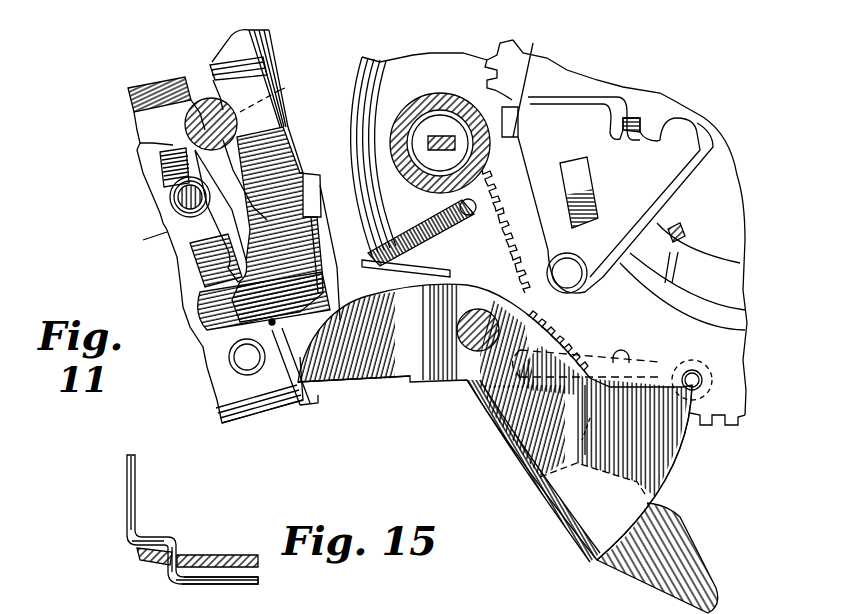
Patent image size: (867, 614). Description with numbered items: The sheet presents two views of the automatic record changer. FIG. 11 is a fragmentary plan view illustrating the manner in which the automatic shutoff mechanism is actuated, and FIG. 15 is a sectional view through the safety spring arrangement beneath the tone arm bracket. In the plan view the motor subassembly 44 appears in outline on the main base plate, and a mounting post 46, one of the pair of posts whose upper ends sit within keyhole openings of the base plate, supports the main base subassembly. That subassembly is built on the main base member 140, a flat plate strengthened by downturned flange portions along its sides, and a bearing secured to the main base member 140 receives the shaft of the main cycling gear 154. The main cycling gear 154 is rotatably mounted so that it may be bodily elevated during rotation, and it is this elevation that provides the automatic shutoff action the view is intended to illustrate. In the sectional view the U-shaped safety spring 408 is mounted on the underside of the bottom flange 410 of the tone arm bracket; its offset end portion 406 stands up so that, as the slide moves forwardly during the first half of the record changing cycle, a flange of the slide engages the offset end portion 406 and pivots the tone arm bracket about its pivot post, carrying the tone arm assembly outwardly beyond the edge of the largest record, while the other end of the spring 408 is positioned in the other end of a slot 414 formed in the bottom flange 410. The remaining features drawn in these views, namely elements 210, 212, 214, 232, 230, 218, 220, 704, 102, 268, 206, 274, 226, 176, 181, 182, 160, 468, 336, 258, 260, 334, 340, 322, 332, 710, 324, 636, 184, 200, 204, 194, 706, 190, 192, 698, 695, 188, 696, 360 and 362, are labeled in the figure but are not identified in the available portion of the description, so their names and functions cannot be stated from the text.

In FIG. 11, the motor subassembly 44 is at (268, 42).
In FIG. 11, the lever cap 210 is at (268, 66).
In FIG. 11, the lever edge 212 is at (279, 96).
In FIG. 11, the pivot pin 214 is at (214, 150).
In FIG. 11, the mounting flange 232 is at (152, 132).
In FIG. 11, the screw 230 is at (168, 188).
In FIG. 11, the fastener 218 is at (243, 360).
In FIG. 11, the spacer plate 220 is at (190, 262).
In FIG. 11, the block 704 is at (264, 292).
In FIG. 11, the plate 102 is at (300, 357).
In FIG. 11, the shoulder 268 is at (322, 186).
In FIG. 11, the rack member 206 is at (320, 245).
In FIG. 11, the body edge 274 is at (207, 347).
In FIG. 11, the lower tab 226 is at (310, 407).
In FIG. 11, the curved arm 176 is at (410, 108).
In FIG. 11, the contour line 181 is at (425, 85).
In FIG. 11, the main base member 140 is at (477, 53).
In FIG. 11, the housing notch 182 is at (507, 90).
In FIG. 11, the gear 160 is at (393, 160).
In FIG. 11, the key 468 is at (440, 137).
In FIG. 11, the gear hub 336 is at (427, 202).
In FIG. 11, the rod 258 is at (400, 235).
In FIG. 11, the bracket 260 is at (425, 268).
In FIG. 11, the housing wall 334 is at (533, 43).
In FIG. 11, the hook 340 is at (630, 118).
In FIG. 11, the outer wall 322 is at (700, 130).
In FIG. 11, the inner wall 332 is at (687, 153).
In FIG. 11, the main cycling gear 154 is at (735, 178).
In FIG. 11, the slot 710 is at (598, 192).
In FIG. 11, the boss 324 is at (590, 258).
In FIG. 11, the arcuate guide 636 is at (680, 240).
In FIG. 11, the rack teeth 184 is at (740, 423).
In FIG. 11, the sector cam 200 is at (568, 320).
In FIG. 11, the mounting post 46 is at (470, 327).
In FIG. 11, the cam base 204 is at (343, 380).
In FIG. 11, the cam edge 194 is at (525, 475).
In FIG. 11, the cam arc 706 is at (683, 448).
In FIG. 11, the tail 190 is at (668, 512).
In FIG. 11, the tail end 192 is at (700, 562).
In FIG. 11, the pivot pin 698 is at (703, 378).
In FIG. 11, the pin 695 is at (698, 365).
In FIG. 11, the pin axis 188 is at (690, 360).
In FIG. 11, the detent 696 is at (640, 383).
In FIG. 11, the spring 360 is at (560, 445).
In FIG. 11, the spring end 362 is at (586, 419).
In FIG. 15, the offset end portion 406 is at (126, 482).
In FIG. 15, the bottom flange 410 is at (232, 553).
In FIG. 15, the slot 414 is at (166, 575).
In FIG. 15, the U-shaped safety spring 408 is at (200, 585).